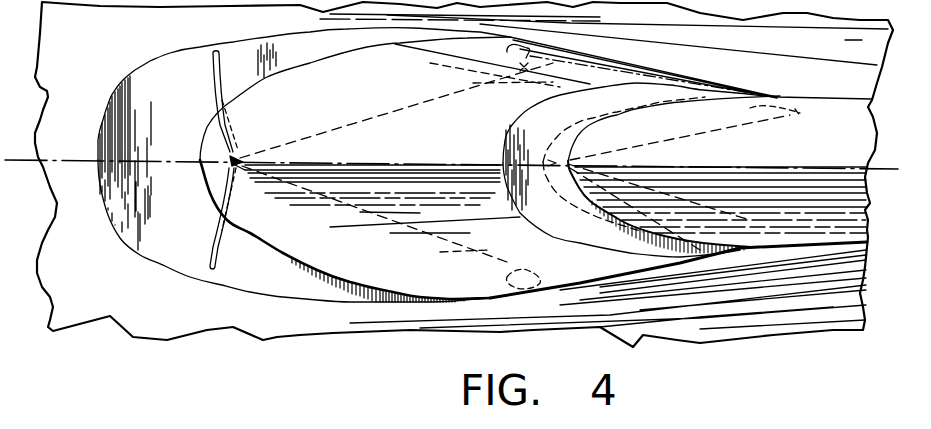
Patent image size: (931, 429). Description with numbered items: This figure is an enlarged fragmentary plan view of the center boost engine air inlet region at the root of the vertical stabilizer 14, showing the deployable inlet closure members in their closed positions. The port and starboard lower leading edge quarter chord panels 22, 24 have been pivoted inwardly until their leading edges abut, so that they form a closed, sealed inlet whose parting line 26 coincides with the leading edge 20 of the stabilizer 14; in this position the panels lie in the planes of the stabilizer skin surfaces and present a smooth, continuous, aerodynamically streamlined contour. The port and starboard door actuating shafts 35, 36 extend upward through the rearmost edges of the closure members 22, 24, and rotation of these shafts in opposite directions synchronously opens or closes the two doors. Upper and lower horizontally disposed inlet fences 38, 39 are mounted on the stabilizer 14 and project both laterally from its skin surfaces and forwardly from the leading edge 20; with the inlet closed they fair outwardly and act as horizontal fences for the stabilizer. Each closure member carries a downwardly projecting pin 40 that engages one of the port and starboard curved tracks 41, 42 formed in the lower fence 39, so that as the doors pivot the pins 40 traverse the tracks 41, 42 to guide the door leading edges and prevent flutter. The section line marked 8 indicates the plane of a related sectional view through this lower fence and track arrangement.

The section line 8- 8 is at (231, 161).
The vertical stabilizer 14 is at (773, 277).
The leading edge 20 is at (814, 169).
The port lower leading edge quarter chord panel 22 is at (317, 236).
The starboard lower leading edge quarter chord panel 24 is at (312, 80).
The parting line 26 is at (403, 162).
The port door actuating shaft 35 is at (557, 270).
The starboard door actuating shaft 36 is at (620, 62).
The upper inlet fence 38 is at (677, 98).
The lower inlet fence 39 is at (150, 78).
The pins 40 is at (233, 148).
The port track 41 is at (210, 263).
The starboard track 42 is at (215, 88).